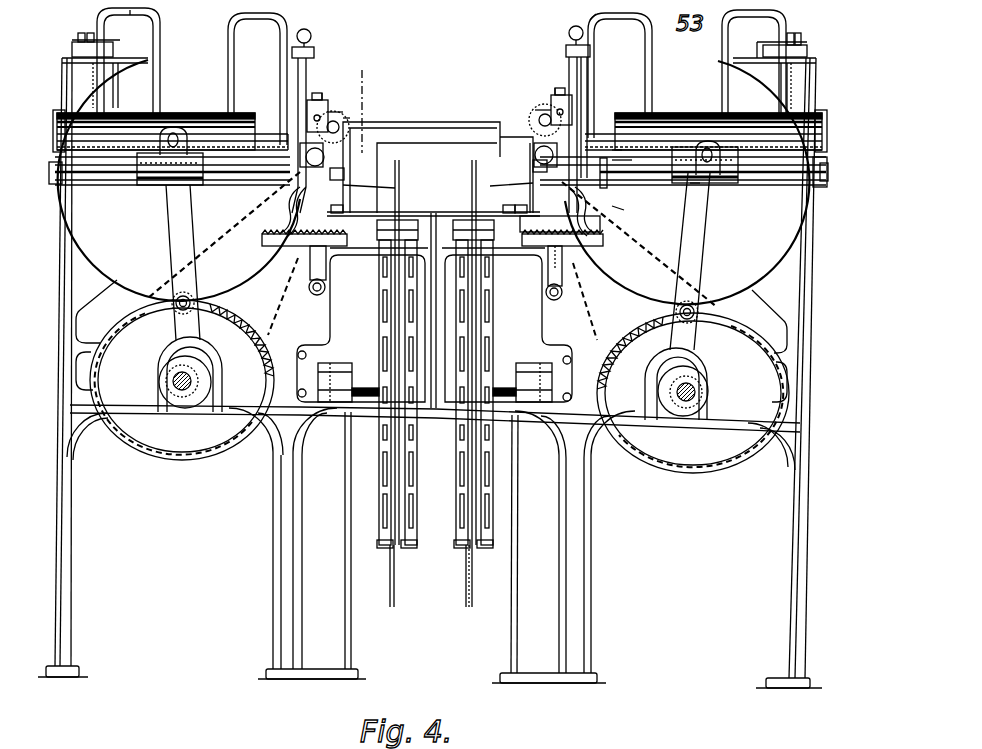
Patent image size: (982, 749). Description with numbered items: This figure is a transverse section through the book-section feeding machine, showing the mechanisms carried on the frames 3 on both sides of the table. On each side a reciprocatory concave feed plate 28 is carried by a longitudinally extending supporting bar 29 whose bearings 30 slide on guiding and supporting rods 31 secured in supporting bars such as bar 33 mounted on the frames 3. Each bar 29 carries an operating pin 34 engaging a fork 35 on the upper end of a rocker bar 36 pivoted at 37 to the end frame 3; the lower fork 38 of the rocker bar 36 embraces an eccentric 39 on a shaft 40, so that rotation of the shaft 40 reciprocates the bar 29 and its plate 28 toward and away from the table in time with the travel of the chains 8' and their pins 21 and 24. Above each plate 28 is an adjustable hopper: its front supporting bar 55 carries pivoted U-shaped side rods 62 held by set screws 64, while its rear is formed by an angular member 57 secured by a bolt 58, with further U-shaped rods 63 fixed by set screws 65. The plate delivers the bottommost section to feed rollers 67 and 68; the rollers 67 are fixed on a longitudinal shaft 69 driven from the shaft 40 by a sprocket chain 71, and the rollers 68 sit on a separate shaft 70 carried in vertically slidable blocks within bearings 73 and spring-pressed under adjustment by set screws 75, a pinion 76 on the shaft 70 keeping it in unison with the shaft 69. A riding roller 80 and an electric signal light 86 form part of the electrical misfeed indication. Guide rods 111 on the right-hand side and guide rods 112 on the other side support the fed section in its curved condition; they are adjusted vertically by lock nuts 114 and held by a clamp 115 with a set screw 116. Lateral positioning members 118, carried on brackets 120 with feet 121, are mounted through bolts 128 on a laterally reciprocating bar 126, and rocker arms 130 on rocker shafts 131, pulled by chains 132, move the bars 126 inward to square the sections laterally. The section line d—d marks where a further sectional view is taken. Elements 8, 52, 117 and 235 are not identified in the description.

The frames 3 is at (70, 70).
The carriage block 8 is at (435, 218).
The chains 8' is at (421, 552).
The pins 21 is at (381, 172).
The pins 24 is at (401, 178).
The reciprocatory concave feed plate 28 is at (666, 113).
The supporting bar 29 is at (205, 165).
The bearings 30 is at (690, 184).
The guiding and supporting rods 31 is at (643, 173).
The supporting bar 33 is at (815, 182).
The operating pin 34 is at (178, 120).
The fork 35 is at (192, 126).
The rocker bar 36 is at (168, 232).
The pivot 37 is at (190, 297).
The fork 38 is at (158, 362).
The eccentric 39 is at (190, 414).
The shaft 40 is at (192, 380).
The bracket 52 is at (114, 50).
The supporting bar 55 is at (607, 32).
The angular member 57 is at (131, 12).
The bolt 58 is at (84, 33).
The U-shaped rods 62 is at (90, 45).
The U-shaped rods 63 is at (722, 51).
The set screws 64 is at (315, 52).
The set screws 65 is at (161, 32).
The feed rollers 67 is at (395, 188).
The feed rollers 68 is at (334, 108).
The shaft 69 is at (289, 214).
The shaft 70 is at (360, 114).
The sprocket chain 71 is at (240, 217).
The bearings 73 is at (343, 118).
The set screws 75 is at (323, 99).
The pinion 76 is at (338, 118).
The riding roller 80 is at (326, 156).
The electric signal light 86 is at (310, 35).
The supporting guide rods 111 is at (468, 122).
The guide rods 112 is at (453, 169).
The lock nuts 114 is at (392, 175).
The clamp 115 is at (628, 154).
The set screw 116 is at (635, 161).
The upright 117 is at (352, 128).
The lateral positioning members 118 is at (426, 203).
The bracket 120 is at (527, 209).
The foot 121 is at (620, 209).
The laterally reciprocating bar 126 is at (517, 234).
The bolts 128 is at (264, 240).
The rocker arms 130 is at (327, 273).
The rocker shafts 131 is at (326, 288).
The chain 132 is at (548, 268).
The slotted bar 235 is at (412, 202).
The section line d— d is at (370, 84).